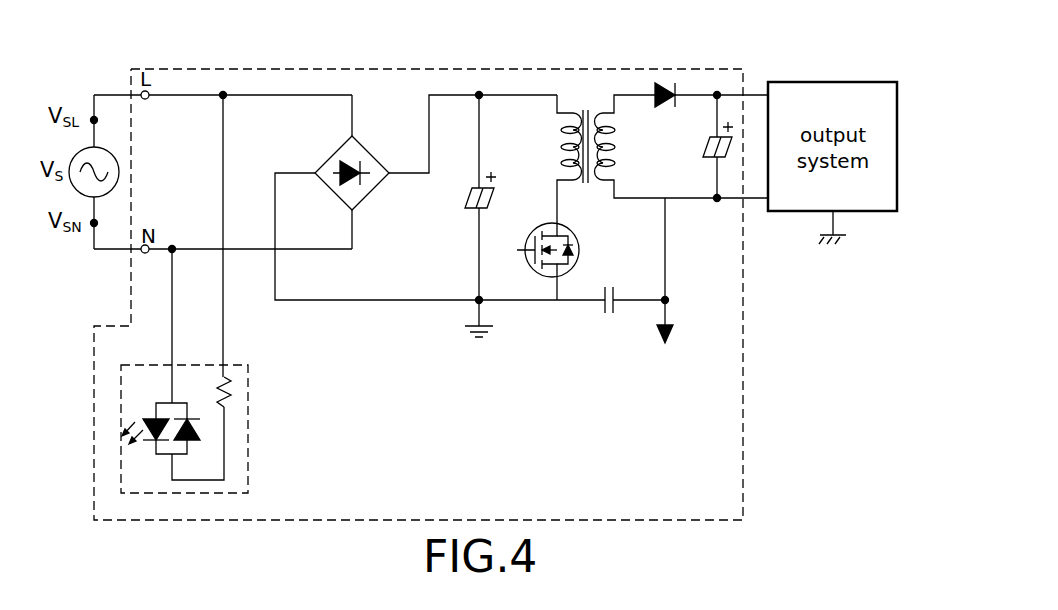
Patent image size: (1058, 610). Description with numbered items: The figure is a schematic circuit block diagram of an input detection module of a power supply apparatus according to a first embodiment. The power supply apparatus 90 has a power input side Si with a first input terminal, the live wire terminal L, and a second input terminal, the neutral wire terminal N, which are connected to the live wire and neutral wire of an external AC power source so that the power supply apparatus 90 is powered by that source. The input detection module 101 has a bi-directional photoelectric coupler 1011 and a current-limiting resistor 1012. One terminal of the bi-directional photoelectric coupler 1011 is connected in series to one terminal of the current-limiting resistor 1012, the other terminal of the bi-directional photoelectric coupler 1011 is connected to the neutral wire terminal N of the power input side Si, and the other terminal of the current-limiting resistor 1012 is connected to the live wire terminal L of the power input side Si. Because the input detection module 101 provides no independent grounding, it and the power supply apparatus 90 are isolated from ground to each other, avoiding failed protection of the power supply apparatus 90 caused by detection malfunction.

The power input side Si is at (179, 147).
The power supply apparatus 90 is at (495, 74).
The input detection module 101 is at (240, 368).
The bi-directional photoelectric coupler 1011 is at (149, 453).
The current-limiting resistor 1012 is at (230, 407).